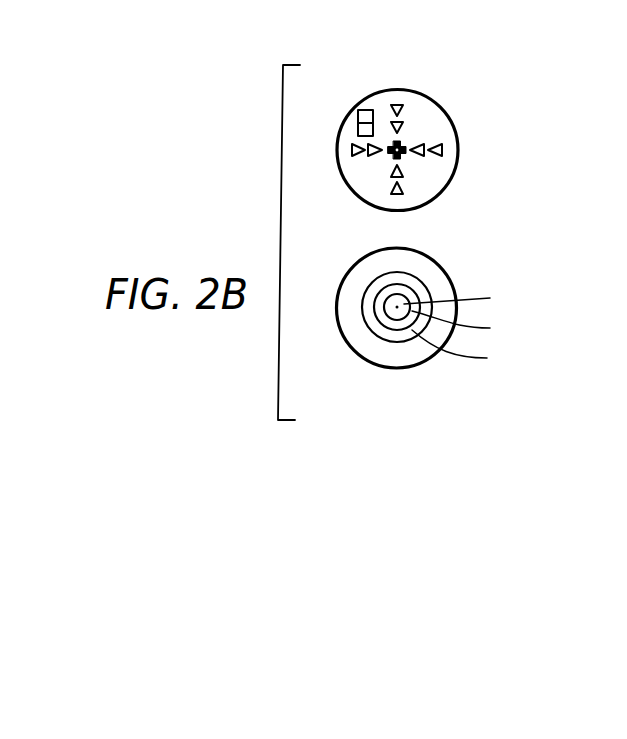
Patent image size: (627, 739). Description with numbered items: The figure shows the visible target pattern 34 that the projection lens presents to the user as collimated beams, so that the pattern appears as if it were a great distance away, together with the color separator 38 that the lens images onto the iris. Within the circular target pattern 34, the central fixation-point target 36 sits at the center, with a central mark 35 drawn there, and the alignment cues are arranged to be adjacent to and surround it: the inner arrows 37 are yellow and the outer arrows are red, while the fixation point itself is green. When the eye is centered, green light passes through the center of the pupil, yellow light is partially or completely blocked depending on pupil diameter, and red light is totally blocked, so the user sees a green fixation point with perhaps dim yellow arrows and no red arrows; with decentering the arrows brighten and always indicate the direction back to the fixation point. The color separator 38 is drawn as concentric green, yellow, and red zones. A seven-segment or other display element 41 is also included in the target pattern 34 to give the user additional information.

The target pattern 34 is at (435, 103).
The center cross indicator 35 is at (401, 143).
The central fixation-point target 36 is at (408, 154).
The inner arrows 37 is at (442, 150).
The color separator 38 is at (448, 278).
The display elements 41 is at (368, 108).